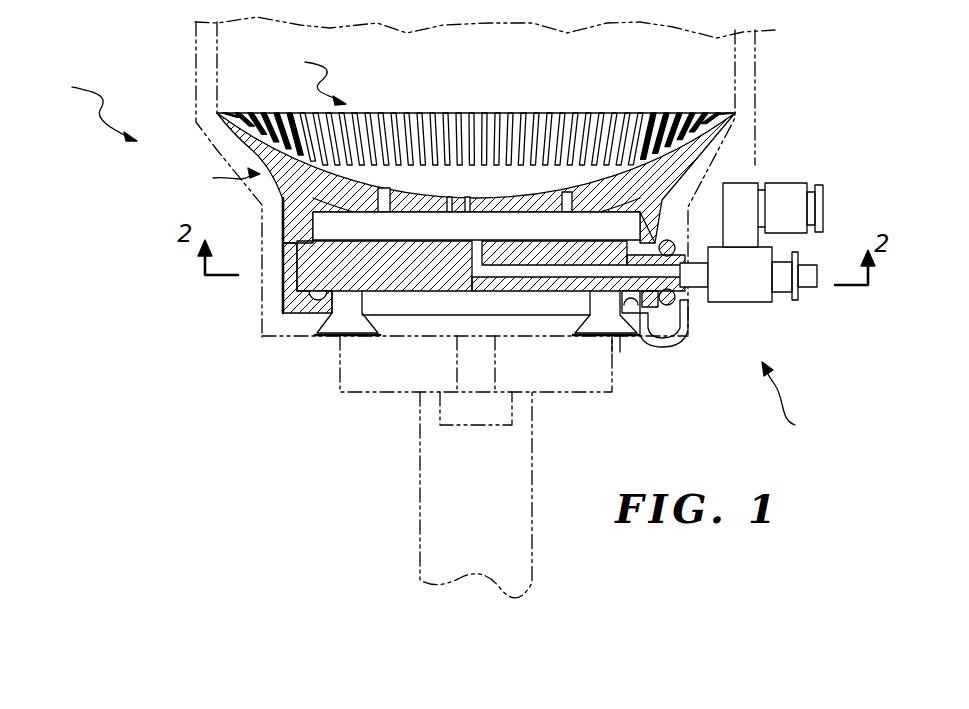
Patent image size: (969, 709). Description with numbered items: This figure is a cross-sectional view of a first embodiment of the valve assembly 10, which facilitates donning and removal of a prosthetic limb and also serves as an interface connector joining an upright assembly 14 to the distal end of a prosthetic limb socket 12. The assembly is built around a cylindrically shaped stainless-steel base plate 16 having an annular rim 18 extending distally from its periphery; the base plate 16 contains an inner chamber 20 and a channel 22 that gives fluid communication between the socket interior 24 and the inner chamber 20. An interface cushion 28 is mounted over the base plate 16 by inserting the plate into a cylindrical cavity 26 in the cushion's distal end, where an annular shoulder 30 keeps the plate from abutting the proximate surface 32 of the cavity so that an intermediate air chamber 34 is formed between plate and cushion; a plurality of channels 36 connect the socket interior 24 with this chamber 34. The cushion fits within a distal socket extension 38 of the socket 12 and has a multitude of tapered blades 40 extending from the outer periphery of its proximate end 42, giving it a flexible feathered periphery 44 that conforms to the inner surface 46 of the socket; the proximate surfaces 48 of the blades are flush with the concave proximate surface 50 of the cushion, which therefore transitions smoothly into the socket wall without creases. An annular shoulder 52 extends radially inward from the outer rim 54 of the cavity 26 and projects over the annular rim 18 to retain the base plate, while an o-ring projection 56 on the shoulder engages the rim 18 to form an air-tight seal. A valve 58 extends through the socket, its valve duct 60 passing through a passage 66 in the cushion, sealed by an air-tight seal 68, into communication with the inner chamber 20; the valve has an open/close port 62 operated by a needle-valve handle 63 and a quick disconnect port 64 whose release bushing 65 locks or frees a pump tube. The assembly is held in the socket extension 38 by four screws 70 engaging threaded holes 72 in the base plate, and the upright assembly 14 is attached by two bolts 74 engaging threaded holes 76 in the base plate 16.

The valve assembly 10 is at (88, 105).
The prosthetic limb socket 12 is at (780, 33).
The upright assembly 14 is at (438, 500).
The base plate 16 is at (265, 340).
The annular rim 18 is at (282, 330).
The inner chamber 20 is at (535, 283).
The channel 22 is at (477, 250).
The socket interior 24 is at (471, 65).
The cylindrical cavity 26 is at (300, 254).
The interface cushion 28 is at (722, 175).
The annular shoulder 30 is at (636, 246).
The proximate surface 32 is at (425, 198).
The intermediate air chamber 34 is at (411, 235).
The channels 36 is at (386, 210).
The distal socket extension 38 is at (262, 290).
The tapered blades 40 is at (552, 122).
The proximate end 42 is at (257, 239).
The feathered periphery 44 is at (476, 78).
The inner surface 46 is at (725, 78).
The proximate surfaces 48 is at (645, 140).
The concave proximate surface 50 is at (512, 200).
The annular shoulder 52 is at (632, 310).
The outer rim 54 is at (678, 335).
The o-ring projection 56 is at (616, 340).
The valve 58 is at (793, 407).
The valve duct 60 is at (699, 258).
The open/close port 62 is at (785, 300).
The needle-valve handle 63 is at (812, 285).
The quick disconnect port 64 is at (786, 186).
The release bushing 65 is at (818, 208).
The passage 66 is at (688, 296).
The air-tight seal 68 is at (687, 250).
The screws 70 is at (318, 340).
The threaded holes 72 is at (348, 292).
The bolts 74 is at (420, 442).
The threaded holes 76 is at (475, 293).